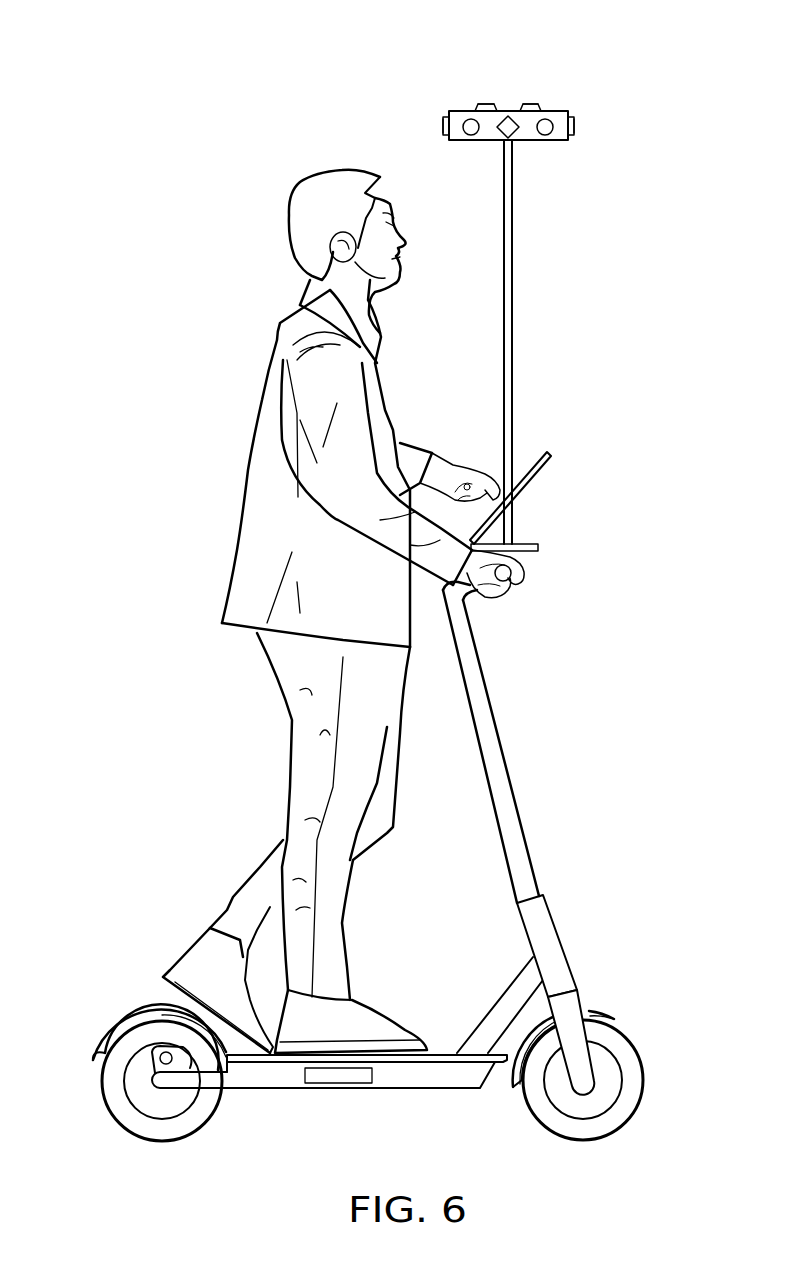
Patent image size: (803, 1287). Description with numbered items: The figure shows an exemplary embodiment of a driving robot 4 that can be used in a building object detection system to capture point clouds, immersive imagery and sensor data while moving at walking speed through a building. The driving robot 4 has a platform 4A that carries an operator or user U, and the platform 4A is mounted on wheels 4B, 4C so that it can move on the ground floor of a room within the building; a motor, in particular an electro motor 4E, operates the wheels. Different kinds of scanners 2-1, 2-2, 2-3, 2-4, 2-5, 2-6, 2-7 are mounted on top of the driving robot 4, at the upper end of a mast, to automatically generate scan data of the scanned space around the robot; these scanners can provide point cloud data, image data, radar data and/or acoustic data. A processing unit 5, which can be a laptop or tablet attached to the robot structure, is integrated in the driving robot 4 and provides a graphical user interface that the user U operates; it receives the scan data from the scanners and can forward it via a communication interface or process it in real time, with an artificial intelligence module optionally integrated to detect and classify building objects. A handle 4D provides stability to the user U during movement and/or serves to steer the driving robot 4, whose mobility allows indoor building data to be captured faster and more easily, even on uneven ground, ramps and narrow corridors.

The driving robot 4 is at (258, 68).
The platform 4A is at (438, 1053).
The wheel 4B is at (643, 1077).
The wheel 4C is at (100, 1062).
The handle 4D is at (487, 604).
The electro motor 4E is at (337, 1078).
The processing unit 5 is at (540, 477).
The user U is at (270, 340).
The scanner 2-1 is at (470, 133).
The scanner 2-2 is at (512, 135).
The scanner 2-3 is at (546, 133).
The scanner 2-4 is at (575, 127).
The scanner 2-5 is at (532, 103).
The scanner 2-6 is at (488, 103).
The scanner 2-7 is at (442, 127).